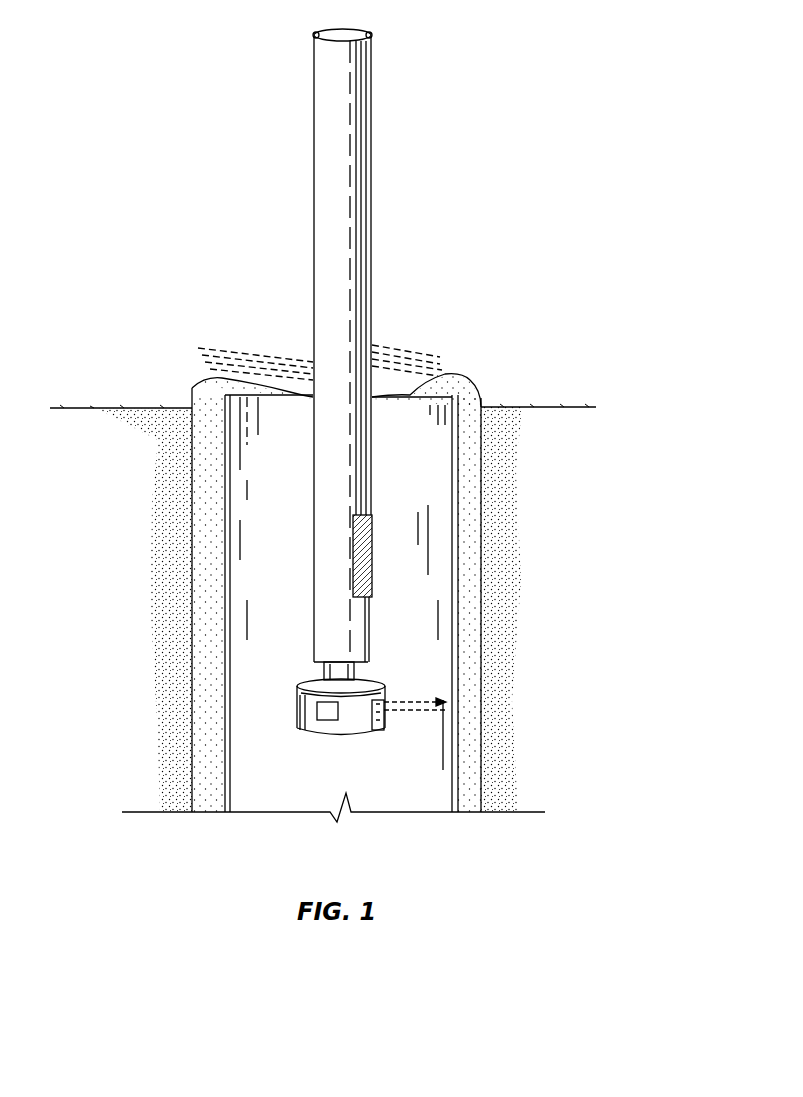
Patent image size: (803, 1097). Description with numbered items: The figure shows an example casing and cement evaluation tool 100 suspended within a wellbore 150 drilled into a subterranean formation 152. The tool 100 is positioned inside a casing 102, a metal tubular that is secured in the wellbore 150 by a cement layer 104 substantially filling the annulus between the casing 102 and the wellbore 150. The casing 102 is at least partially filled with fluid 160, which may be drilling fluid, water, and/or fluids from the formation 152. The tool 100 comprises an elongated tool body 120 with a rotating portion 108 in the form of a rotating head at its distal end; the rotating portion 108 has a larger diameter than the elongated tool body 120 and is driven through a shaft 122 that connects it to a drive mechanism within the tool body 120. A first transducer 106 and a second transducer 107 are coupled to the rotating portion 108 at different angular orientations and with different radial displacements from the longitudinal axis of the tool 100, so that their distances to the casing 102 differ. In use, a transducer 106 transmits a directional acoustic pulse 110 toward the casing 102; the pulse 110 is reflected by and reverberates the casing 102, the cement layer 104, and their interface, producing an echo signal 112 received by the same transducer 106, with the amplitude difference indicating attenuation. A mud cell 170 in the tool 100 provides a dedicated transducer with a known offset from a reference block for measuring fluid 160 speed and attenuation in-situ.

The casing and cement evaluation tool 100 is at (412, 412).
The casing 102 is at (283, 385).
The cement layer 104 is at (480, 495).
The acoustic transducer 106 is at (370, 712).
The second transducer 107 is at (300, 718).
The rotating portion 108 is at (300, 712).
The directional acoustic pulse 110 is at (428, 700).
The echo signal 112 is at (423, 712).
The elongated tool body 120 is at (380, 224).
The shaft 122 is at (318, 679).
The wellbore 150 is at (213, 562).
The subterranean formation 152 is at (512, 568).
The fluid 160 is at (423, 465).
The mud cell 170 is at (372, 567).